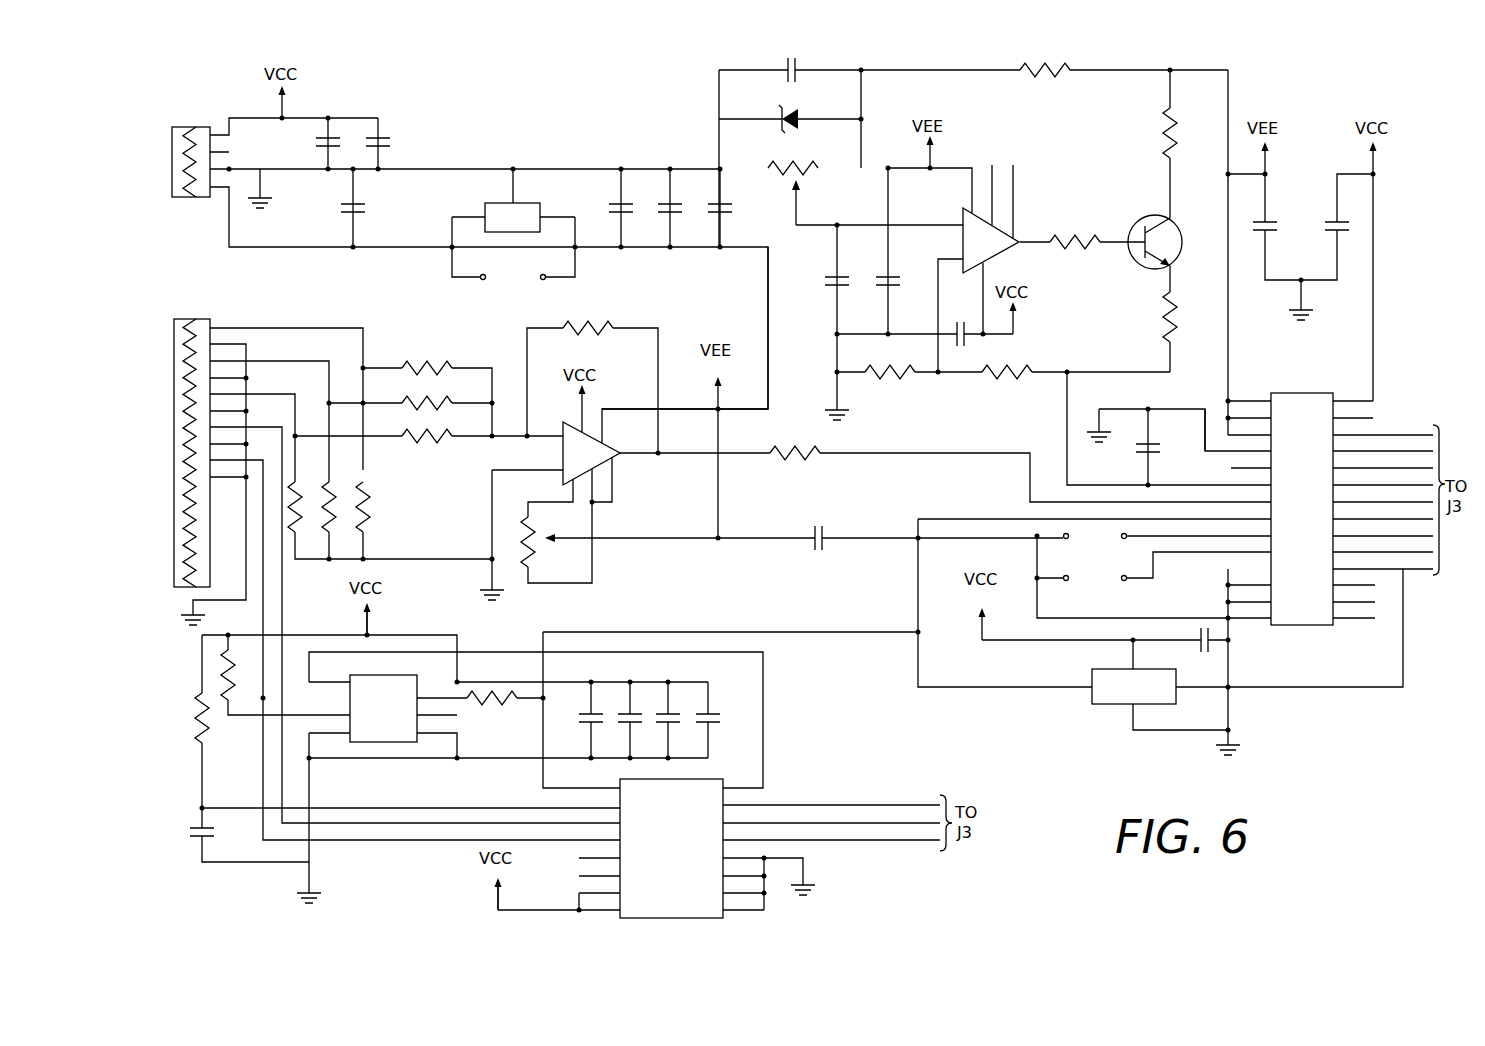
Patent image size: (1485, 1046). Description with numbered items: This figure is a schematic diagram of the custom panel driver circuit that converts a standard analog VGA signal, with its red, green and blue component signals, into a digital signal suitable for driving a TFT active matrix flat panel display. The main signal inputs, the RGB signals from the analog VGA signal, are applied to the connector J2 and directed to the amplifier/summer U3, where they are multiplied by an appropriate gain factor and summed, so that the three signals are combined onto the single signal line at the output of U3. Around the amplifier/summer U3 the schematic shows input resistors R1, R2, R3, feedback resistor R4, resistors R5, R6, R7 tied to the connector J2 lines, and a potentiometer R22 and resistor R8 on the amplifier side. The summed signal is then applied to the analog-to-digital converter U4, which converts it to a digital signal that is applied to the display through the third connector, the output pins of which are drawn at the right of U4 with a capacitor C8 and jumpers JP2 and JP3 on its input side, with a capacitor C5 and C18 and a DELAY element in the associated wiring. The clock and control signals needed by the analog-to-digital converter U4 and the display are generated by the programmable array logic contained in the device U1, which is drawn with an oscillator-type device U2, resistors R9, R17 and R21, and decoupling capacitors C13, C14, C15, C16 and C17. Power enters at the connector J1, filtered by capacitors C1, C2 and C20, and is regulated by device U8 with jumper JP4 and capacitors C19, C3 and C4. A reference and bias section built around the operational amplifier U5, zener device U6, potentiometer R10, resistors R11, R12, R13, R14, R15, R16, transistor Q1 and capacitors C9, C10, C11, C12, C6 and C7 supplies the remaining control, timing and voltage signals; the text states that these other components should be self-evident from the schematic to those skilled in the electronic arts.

The connector J1 is at (196, 151).
The connector J2 is at (202, 442).
The capacitor C1 is at (316, 143).
The capacitor C2 is at (389, 143).
The capacitor C20 is at (369, 208).
The voltage regulator U8 is at (513, 208).
The jumper JP4 is at (513, 277).
The capacitor C19 is at (608, 208).
The capacitor C3 is at (661, 208).
The capacitor C4 is at (711, 208).
The capacitor C12 is at (772, 66).
The zener diode U6 is at (801, 116).
The potentiometer R10 is at (776, 186).
The resistor R12 is at (1045, 80).
The resistor R13 is at (1150, 133).
The resistor R11 is at (1075, 234).
The transistor Q1 is at (1168, 242).
The resistor R16 is at (1152, 317).
The operational amplifier U5 is at (987, 236).
The capacitor C11 is at (826, 271).
The capacitor C9 is at (895, 271).
The capacitor C10 is at (956, 322).
The resistor R15 is at (890, 383).
The resistor R14 is at (1007, 383).
The capacitor C6 is at (1256, 217).
The capacitor C7 is at (1343, 215).
The capacitor C8 is at (1154, 439).
The analog-to-digital converter U4 is at (1302, 506).
The resistor R1 is at (414, 361).
The resistor R2 is at (439, 396).
The resistor R3 is at (414, 429).
The resistor R5 is at (304, 494).
The resistor R6 is at (337, 516).
The resistor R7 is at (371, 494).
The amplifier/summer U3 is at (590, 454).
The resistor R4 is at (588, 320).
The resistor R8 is at (795, 445).
The potentiometer R22 is at (546, 540).
The capacitor C5 is at (804, 533).
The jumper JP2 is at (1095, 535).
The jumper JP3 is at (1095, 577).
The capacitor C18 is at (1201, 649).
The delay element DELAY is at (1134, 685).
The resistor R17 is at (184, 715).
The resistor R9 is at (239, 668).
The capacitor C17 is at (220, 834).
The integrated circuit U2 is at (383, 704).
The resistor R21 is at (492, 709).
The capacitor C13 is at (578, 732).
The capacitor C14 is at (618, 704).
The capacitor C15 is at (680, 704).
The capacitor C16 is at (720, 732).
The programmable array logic device U1 is at (672, 845).